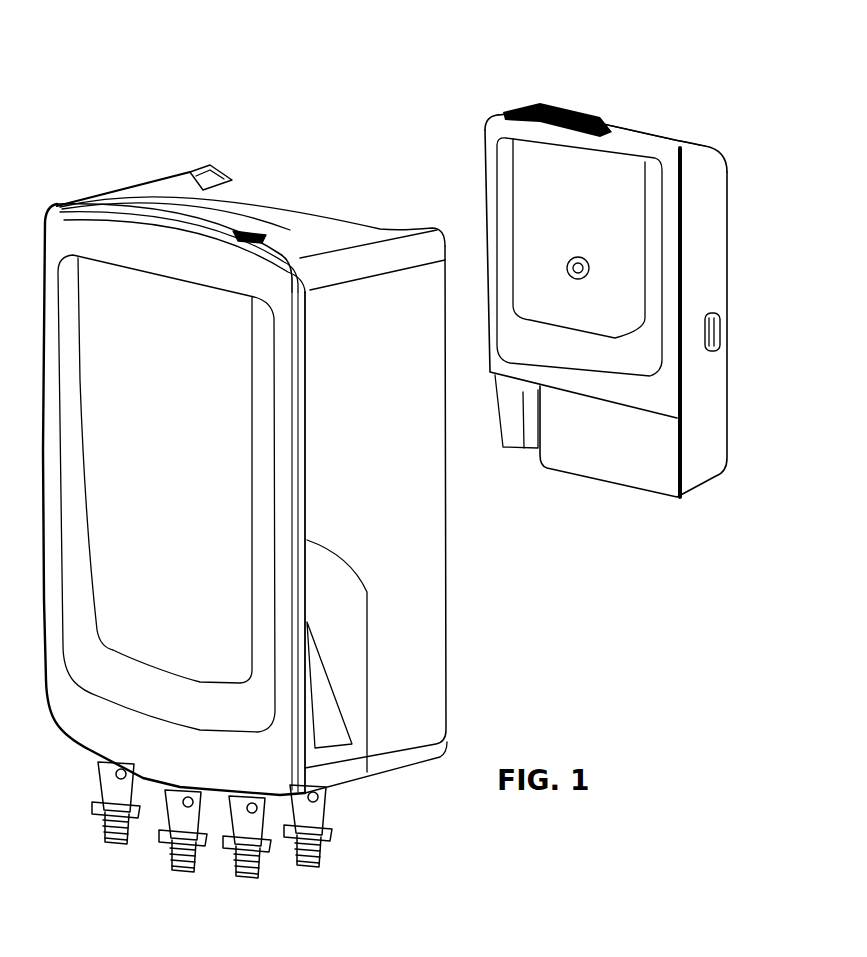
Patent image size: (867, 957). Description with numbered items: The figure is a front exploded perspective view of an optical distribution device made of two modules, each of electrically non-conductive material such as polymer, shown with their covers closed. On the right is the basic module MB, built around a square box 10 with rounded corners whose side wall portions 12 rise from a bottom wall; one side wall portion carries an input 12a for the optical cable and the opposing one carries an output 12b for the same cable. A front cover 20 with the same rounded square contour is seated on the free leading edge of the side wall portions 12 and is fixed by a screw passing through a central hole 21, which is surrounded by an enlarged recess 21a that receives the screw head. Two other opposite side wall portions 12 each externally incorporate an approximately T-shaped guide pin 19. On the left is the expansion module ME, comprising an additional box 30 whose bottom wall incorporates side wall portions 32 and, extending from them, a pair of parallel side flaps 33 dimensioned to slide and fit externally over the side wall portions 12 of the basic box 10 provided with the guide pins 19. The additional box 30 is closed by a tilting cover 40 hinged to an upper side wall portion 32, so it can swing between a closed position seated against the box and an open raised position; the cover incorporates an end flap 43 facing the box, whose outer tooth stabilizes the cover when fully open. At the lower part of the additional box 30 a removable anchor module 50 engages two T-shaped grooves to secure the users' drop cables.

The expansion module ME is at (77, 182).
The additional box 30 is at (124, 181).
The end flap 43 is at (214, 229).
The side wall portions 32 is at (318, 229).
The tilting cover 40 is at (227, 351).
The side flaps 33 is at (449, 588).
The anchor module 50 is at (166, 810).
The basic module MB is at (692, 118).
The square box 10 is at (496, 109).
The side wall portions 12 is at (611, 124).
The input 12a is at (522, 420).
The output 12b is at (526, 110).
The front cover 20 is at (531, 183).
The central hole 21 is at (554, 262).
The enlarged recess 21a is at (579, 282).
The guide pin 19 is at (713, 358).